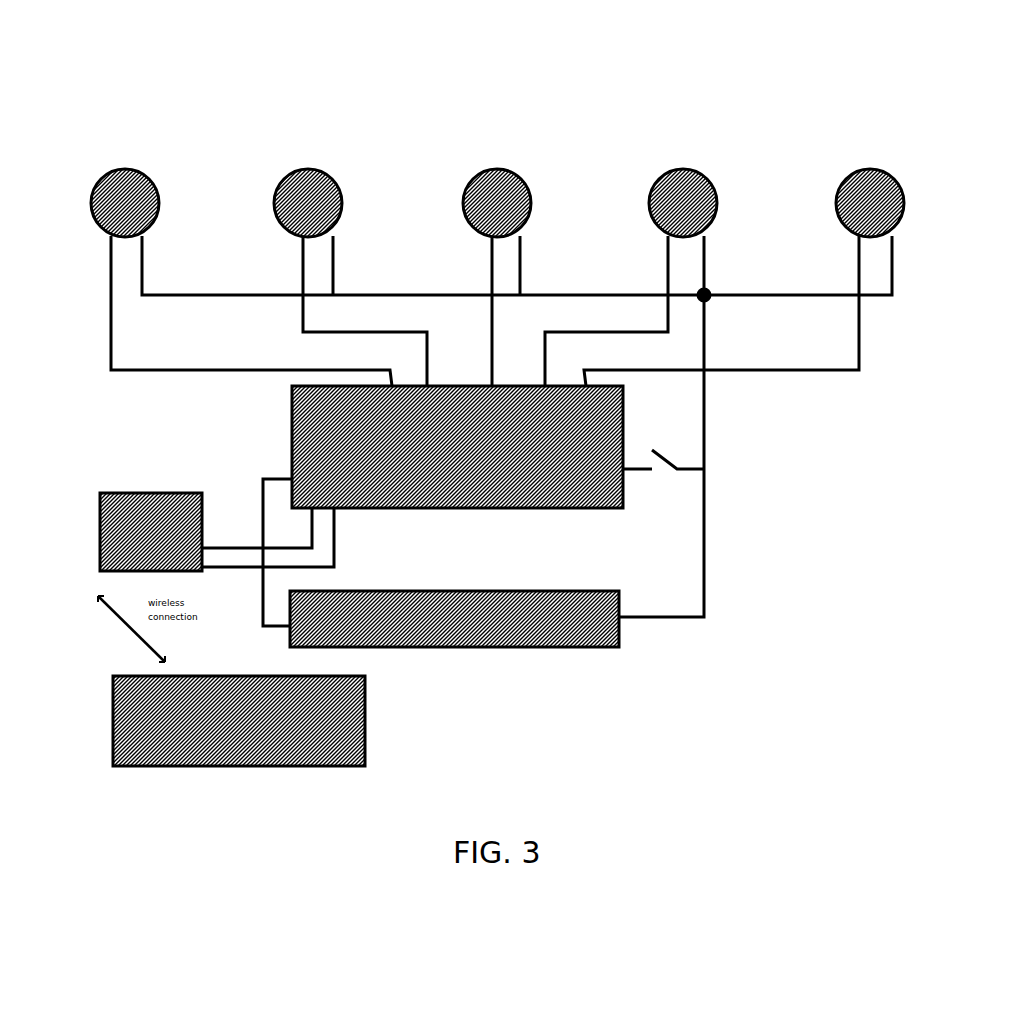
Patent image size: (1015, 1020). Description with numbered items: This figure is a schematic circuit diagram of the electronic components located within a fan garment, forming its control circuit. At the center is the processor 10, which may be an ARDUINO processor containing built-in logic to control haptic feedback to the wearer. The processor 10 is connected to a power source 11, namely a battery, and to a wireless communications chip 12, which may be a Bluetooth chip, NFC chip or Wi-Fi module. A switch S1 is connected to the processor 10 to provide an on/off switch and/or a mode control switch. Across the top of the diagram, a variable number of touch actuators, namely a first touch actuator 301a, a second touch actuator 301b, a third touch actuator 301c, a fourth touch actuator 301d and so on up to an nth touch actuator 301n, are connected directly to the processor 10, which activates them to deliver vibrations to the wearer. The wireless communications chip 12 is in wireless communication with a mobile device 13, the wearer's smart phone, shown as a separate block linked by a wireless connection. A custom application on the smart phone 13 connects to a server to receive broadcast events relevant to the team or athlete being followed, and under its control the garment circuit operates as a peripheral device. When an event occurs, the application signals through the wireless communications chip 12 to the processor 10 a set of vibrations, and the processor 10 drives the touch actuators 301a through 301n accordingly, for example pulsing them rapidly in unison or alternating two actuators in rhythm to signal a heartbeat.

The touch actuator V1 301a is at (132, 185).
The touch actuator V2 301b is at (315, 185).
The touch actuator V3 301c is at (492, 185).
The touch actuator V4 301d is at (685, 193).
The touch actuator Vn 301n is at (873, 193).
The processor 10 is at (457, 464).
The power source 11 is at (441, 584).
The wireless communications chip 12 is at (217, 512).
The mobile device 13 is at (239, 721).
The switch S1 is at (663, 477).